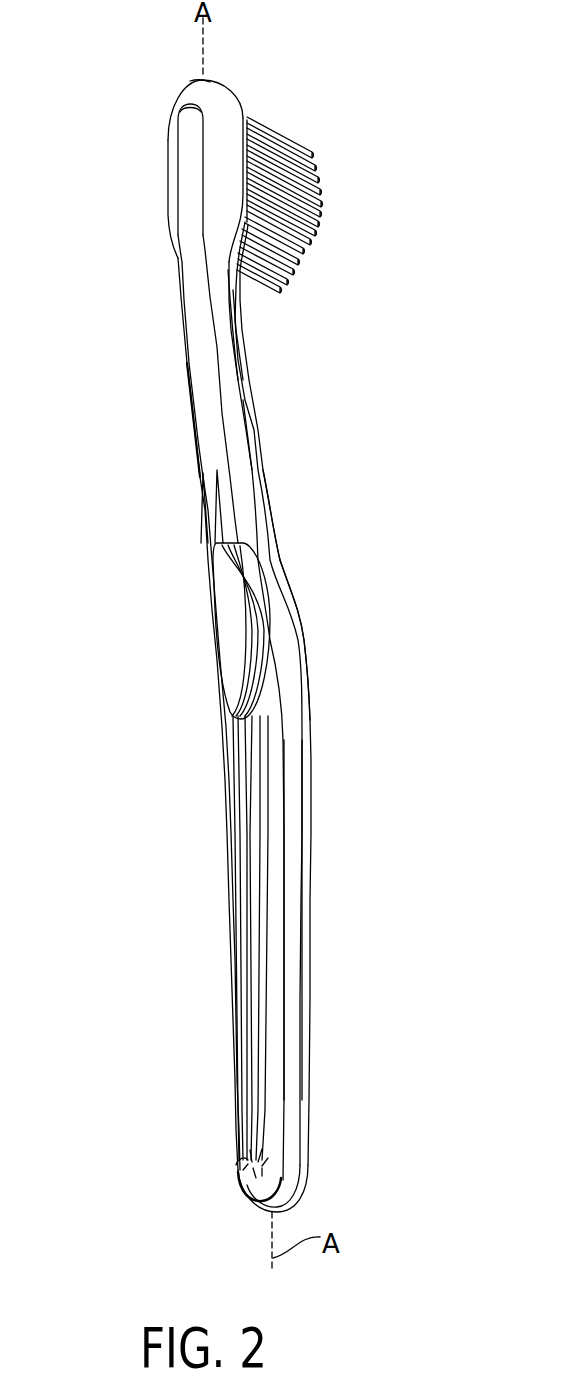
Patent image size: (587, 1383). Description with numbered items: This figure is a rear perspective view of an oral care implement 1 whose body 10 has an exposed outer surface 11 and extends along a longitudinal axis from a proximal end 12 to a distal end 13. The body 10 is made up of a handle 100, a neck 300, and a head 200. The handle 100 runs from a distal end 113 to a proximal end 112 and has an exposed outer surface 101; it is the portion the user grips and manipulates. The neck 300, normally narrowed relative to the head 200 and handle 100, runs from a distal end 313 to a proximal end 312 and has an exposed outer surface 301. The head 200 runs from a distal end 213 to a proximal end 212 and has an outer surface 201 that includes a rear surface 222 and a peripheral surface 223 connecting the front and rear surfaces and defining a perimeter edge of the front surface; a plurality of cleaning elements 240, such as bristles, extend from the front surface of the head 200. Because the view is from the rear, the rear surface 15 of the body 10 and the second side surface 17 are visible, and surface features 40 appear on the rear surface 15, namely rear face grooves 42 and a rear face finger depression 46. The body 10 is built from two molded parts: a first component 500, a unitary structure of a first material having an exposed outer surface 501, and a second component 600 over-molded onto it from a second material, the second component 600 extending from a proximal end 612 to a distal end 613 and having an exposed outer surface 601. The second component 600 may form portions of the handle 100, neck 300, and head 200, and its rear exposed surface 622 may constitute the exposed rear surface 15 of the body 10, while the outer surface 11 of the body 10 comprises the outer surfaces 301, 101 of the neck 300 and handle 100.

The oral care implement 1 is at (404, 154).
The body 10 is at (290, 548).
The outer surface 11 is at (300, 258).
The proximal end 12 is at (288, 1205).
The distal end 13 is at (200, 78).
The rear surface 15 is at (227, 637).
The second side surface 17 is at (300, 640).
The surface features 40 is at (222, 805).
The rear face grooves 42 is at (235, 902).
The rear face finger depression 46 is at (224, 670).
The handle 100 is at (302, 980).
The outer surface of the handle 101 is at (253, 843).
The proximal end of the handle 112 is at (272, 1207).
The distal end of the handle 113 is at (243, 452).
The head 200 is at (158, 156).
The outer surface of the head 201 is at (222, 223).
The proximal end of the head 212 is at (193, 288).
The distal end of the head 213 is at (193, 82).
The rear surface of the head 222 is at (172, 137).
The peripheral surface 223 is at (247, 133).
The cleaning elements 240 is at (313, 208).
The neck 300 is at (189, 396).
The outer surface of the neck 301 is at (197, 350).
The proximal end of the neck 312 is at (207, 457).
The distal end of the neck 313 is at (220, 292).
The first component 500 is at (223, 128).
The outer surface of the first component 501 is at (225, 165).
The second component 600 is at (232, 975).
The outer surface of the second component 601 is at (207, 437).
The proximal end of the second component 612 is at (265, 1208).
The distal end of the second component 613 is at (190, 108).
The rear exposed surface of the second component 622 is at (237, 770).